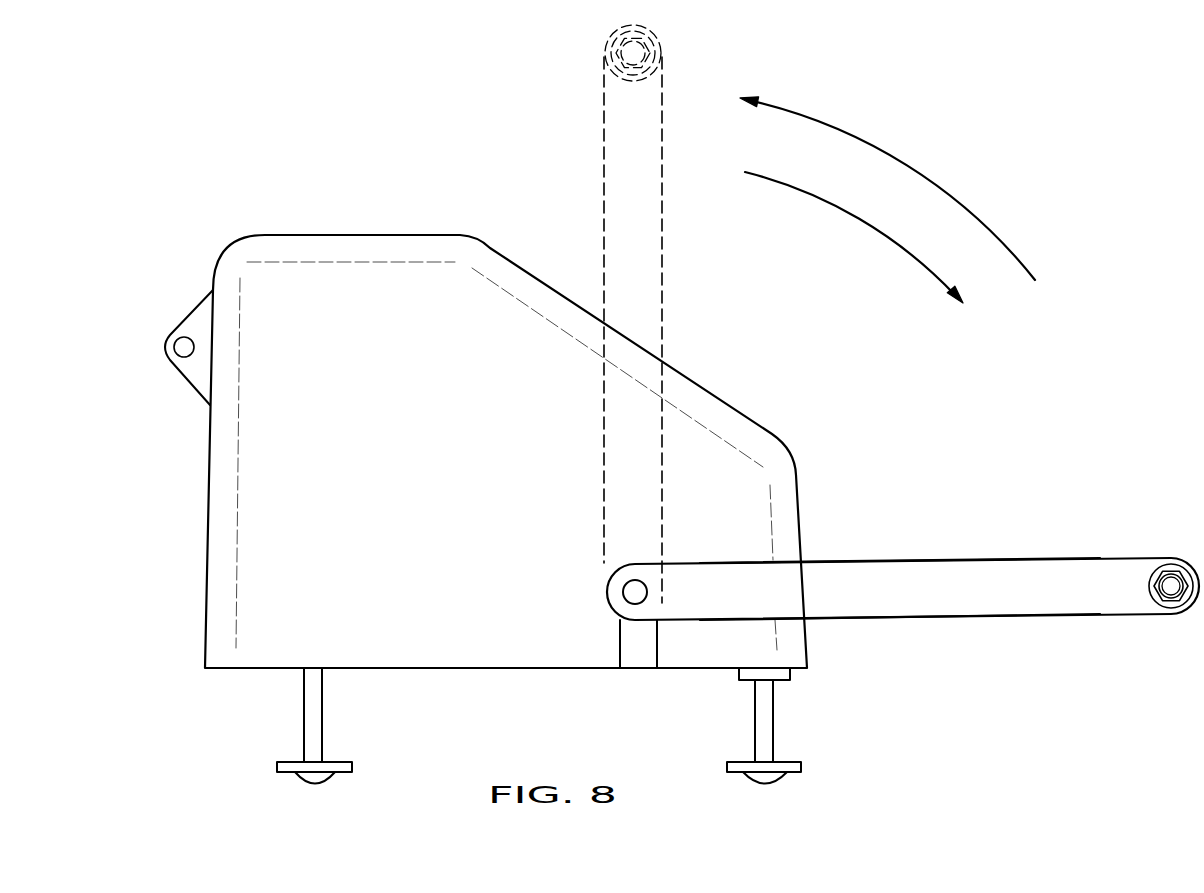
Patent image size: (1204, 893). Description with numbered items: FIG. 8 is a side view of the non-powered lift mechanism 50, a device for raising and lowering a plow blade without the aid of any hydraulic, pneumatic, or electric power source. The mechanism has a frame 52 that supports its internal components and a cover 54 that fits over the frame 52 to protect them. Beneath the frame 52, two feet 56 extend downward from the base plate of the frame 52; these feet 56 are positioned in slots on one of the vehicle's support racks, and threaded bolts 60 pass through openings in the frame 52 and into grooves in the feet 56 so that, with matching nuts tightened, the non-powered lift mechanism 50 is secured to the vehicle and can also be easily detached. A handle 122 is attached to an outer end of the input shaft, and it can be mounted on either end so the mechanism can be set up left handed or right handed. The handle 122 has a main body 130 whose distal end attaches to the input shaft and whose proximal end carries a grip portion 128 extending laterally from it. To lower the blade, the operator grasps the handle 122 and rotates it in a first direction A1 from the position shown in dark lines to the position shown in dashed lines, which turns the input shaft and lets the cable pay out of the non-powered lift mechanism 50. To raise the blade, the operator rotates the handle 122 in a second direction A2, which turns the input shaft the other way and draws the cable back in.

The non-powered lift mechanism 50 is at (357, 200).
The frame 52 is at (637, 658).
The cover 54 is at (282, 242).
The foot 56 is at (293, 762).
The threaded bolt 60 is at (315, 712).
The handle 122 is at (604, 138).
The grip portion 128 is at (1192, 570).
The main body 130 is at (604, 218).
The first direction A1 is at (895, 152).
The second direction A2 is at (847, 208).